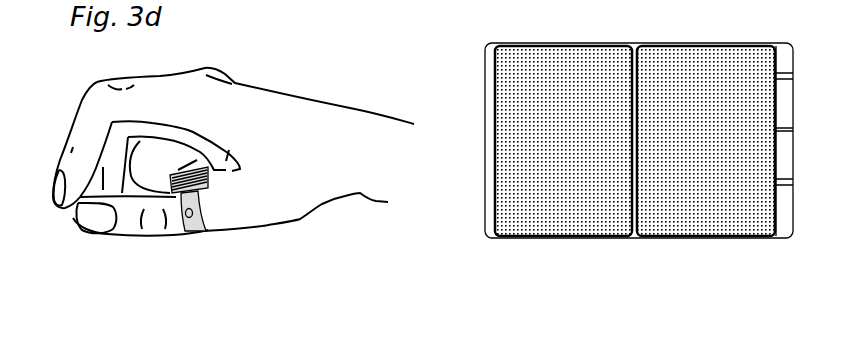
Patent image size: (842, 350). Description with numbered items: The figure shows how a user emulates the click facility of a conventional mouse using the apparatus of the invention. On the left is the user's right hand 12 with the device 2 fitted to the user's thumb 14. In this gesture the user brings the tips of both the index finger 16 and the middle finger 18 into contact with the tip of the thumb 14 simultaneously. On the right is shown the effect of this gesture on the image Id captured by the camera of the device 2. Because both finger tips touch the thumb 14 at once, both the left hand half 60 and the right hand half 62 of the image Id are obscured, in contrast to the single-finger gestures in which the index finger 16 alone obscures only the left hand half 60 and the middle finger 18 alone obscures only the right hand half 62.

The device 2 is at (201, 235).
The right hand 12 is at (242, 149).
The thumb 14 is at (132, 233).
The index finger 16 is at (112, 145).
The middle finger 18 is at (78, 228).
The image Id is at (484, 72).
The left hand half 60 is at (533, 210).
The right hand half 62 is at (692, 210).